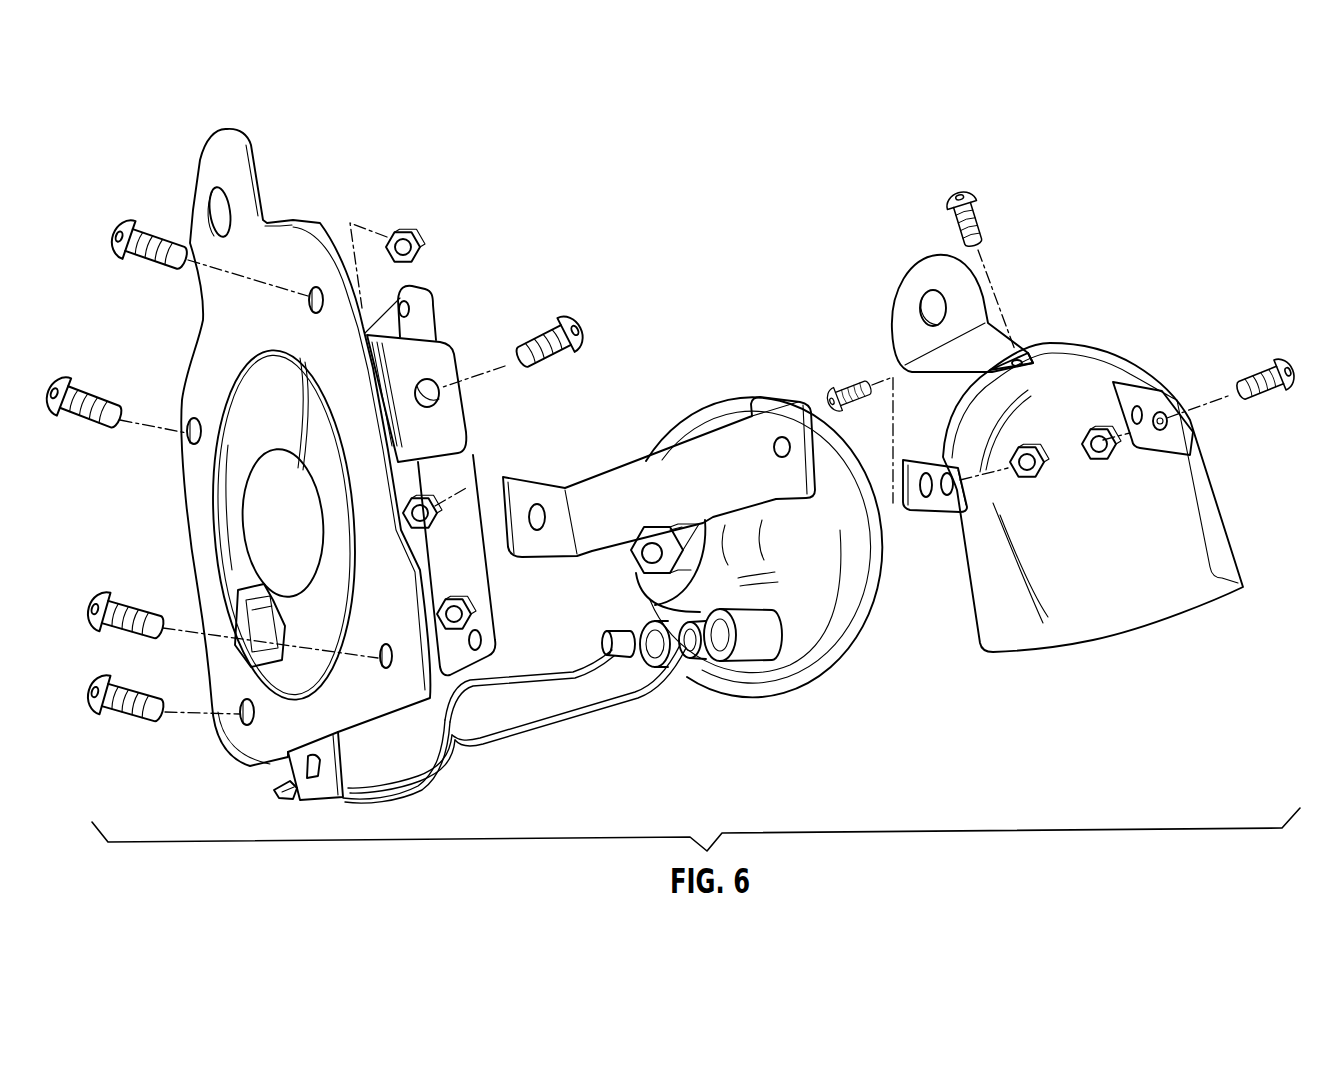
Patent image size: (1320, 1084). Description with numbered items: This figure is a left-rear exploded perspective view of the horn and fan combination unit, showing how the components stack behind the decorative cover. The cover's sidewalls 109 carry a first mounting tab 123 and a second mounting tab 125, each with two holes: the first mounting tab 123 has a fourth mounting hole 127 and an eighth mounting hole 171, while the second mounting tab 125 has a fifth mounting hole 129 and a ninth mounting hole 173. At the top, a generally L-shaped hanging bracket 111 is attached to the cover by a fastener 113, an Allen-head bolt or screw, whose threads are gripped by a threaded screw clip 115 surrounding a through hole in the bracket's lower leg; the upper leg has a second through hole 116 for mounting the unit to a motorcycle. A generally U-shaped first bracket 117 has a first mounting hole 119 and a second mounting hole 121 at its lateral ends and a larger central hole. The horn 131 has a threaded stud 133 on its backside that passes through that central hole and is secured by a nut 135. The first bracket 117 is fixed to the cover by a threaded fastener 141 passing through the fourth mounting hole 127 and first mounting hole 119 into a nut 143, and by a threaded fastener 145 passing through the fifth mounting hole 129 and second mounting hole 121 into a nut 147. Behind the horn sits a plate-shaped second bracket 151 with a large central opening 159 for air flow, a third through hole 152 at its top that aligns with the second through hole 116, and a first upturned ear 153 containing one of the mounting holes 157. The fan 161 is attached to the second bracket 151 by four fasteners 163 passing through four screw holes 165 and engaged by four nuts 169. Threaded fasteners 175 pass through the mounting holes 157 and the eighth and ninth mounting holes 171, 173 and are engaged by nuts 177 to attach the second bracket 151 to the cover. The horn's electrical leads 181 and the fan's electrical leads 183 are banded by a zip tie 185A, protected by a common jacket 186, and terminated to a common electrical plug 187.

The sidewalls 109 is at (1218, 530).
The hanging bracket 111 is at (905, 352).
The fastener 113 is at (975, 202).
The threaded screw clip 115 is at (1020, 357).
The second through hole 116 is at (925, 310).
The first bracket 117 is at (598, 488).
The first mounting hole 119 is at (770, 398).
The second mounting hole 121 is at (538, 504).
The first mounting tab 123 is at (1140, 393).
The second mounting tab 125 is at (943, 520).
The fourth mounting hole 127 is at (1164, 414).
The fifth mounting hole 129 is at (962, 509).
The horn 131 is at (832, 660).
The threaded stud 133 is at (653, 542).
The nut 135 is at (676, 540).
The threaded fastener 141 is at (1280, 358).
The nut 143 is at (1100, 462).
The threaded fastener 145 is at (830, 386).
The nut 147 is at (1030, 480).
The second bracket 151 is at (290, 238).
The third through hole 152 is at (228, 190).
The first upturned ear 153 is at (432, 348).
The sixth and seventh mounting holes 157 is at (434, 386).
The large central opening 159 is at (214, 500).
The fan 161 is at (415, 288).
The fasteners 163 is at (128, 223).
The screw holes 165 is at (318, 313).
The nuts 169 is at (405, 230).
The eighth mounting hole 171 is at (1131, 409).
The ninth mounting hole 173 is at (922, 497).
The threaded fasteners 175 is at (560, 318).
The nuts 177 is at (471, 460).
The electrical leads 181 is at (593, 660).
The electrical leads 183 is at (462, 760).
The zip tie 185A is at (296, 800).
The common jacket 186 is at (230, 745).
The common electrical plug 187 is at (240, 606).